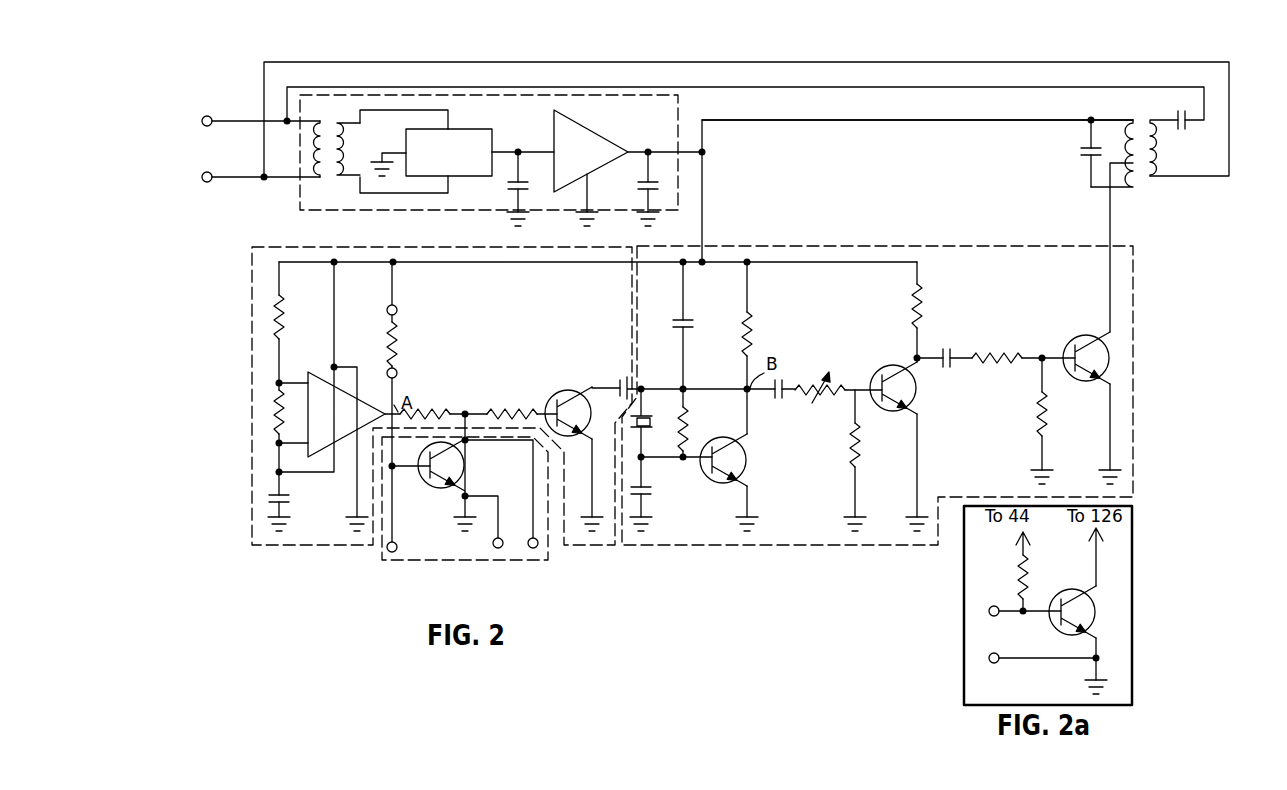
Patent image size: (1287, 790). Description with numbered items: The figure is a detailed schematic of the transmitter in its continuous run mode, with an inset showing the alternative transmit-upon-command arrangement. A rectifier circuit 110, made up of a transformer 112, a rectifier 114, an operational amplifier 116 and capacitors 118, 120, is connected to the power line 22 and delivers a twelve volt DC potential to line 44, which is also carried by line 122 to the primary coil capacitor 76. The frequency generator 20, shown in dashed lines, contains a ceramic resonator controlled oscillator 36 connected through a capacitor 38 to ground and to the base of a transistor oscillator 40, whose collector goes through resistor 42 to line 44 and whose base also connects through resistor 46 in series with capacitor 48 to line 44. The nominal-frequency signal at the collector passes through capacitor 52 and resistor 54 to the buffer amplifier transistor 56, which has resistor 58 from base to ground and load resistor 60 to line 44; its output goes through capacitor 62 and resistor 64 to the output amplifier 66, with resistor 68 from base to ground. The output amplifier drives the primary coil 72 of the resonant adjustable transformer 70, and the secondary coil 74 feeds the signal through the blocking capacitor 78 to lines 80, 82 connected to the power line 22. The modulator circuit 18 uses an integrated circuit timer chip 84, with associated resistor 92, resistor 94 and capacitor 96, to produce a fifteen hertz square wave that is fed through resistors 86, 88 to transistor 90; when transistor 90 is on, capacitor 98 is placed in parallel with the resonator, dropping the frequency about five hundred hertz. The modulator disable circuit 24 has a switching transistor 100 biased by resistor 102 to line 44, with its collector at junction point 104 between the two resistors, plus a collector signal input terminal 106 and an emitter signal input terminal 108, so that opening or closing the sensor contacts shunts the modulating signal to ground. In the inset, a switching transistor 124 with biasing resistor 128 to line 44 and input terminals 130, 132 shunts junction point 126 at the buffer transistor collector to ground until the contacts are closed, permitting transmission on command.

In FIG. 2, the modulator circuit 18 is at (252, 278).
In FIG. 2, the frequency generator 20 is at (1134, 282).
In FIG. 2, the power line 22 is at (247, 120).
In FIG. 2, the modulator disable circuit 24 is at (478, 565).
In FIG. 2, the ceramic resonator controlled oscillator 36 is at (650, 423).
In FIG. 2, the capacitor 38 is at (650, 490).
In FIG. 2, the transistor oscillator 40 is at (746, 465).
In FIG. 2, the resistor 42 is at (755, 332).
In FIG. 2, the line 44 is at (830, 260).
In FIG. 2, the resistor 46 is at (692, 447).
In FIG. 2, the capacitor 48 is at (692, 323).
In FIG. 2, the capacitor 52 is at (778, 400).
In FIG. 2, the resistor 54 is at (838, 373).
In FIG. 2, the buffer amplifier transistor 56 is at (918, 393).
In FIG. 2, the resistor 58 is at (862, 453).
In FIG. 2, the load resistor 60 is at (925, 285).
In FIG. 2, the capacitor 62 is at (950, 350).
In FIG. 2, the resistor 64 is at (1020, 362).
In FIG. 2, the output amplifier 66 is at (1110, 358).
In FIG. 2, the resistor 68 is at (1048, 408).
In FIG. 2, the resonant adjustable transformer 70 is at (1149, 184).
In FIG. 2, the primary coil 72 is at (1128, 122).
In FIG. 2, the secondary coil 74 is at (1158, 152).
In FIG. 2, the primary coil capacitor 76 is at (1082, 156).
In FIG. 2, the blocking capacitor 78 is at (1190, 115).
In FIG. 2, the line 80 is at (1150, 85).
In FIG. 2, the line 82 is at (1200, 62).
In FIG. 2, the integrated circuit timer chip 84 is at (300, 445).
In FIG. 2, the resistor 86 is at (436, 410).
In FIG. 2, the resistor 88 is at (520, 410).
In FIG. 2, the transistor 90 is at (565, 391).
In FIG. 2, the resistor 92 is at (284, 316).
In FIG. 2, the resistor 94 is at (271, 408).
In FIG. 2, the capacitor 96 is at (270, 508).
In FIG. 2, the capacitor 98 is at (618, 386).
In FIG. 2, the switching transistor 100 is at (431, 474).
In FIG. 2, the resistor / signal input contact 102 is at (398, 312).
In FIG. 2, the junction point 104 is at (465, 411).
In FIG. 2, the collector signal input terminal 106 is at (538, 548).
In FIG. 2, the emitter signal input terminal 108 is at (500, 550).
In FIG. 2, the rectifier circuit 110 is at (510, 92).
In FIG. 2, the transformer 112 is at (322, 120).
In FIG. 2, the rectifier 114 is at (456, 128).
In FIG. 2, the operational amplifier 116 is at (588, 136).
In FIG. 2, the capacitor 118 is at (512, 186).
In FIG. 2, the capacitor 120 is at (645, 188).
In FIG. 2, the line 122 is at (862, 122).
In FIG. 2A, the switching transistor 124 is at (1097, 605).
In FIG. 2, the junction point 126 is at (915, 355).
In FIG. 2A, the biasing resistor 128 is at (1030, 574).
In FIG. 2A, the input terminal 130 is at (989, 611).
In FIG. 2A, the input terminal 132 is at (989, 658).